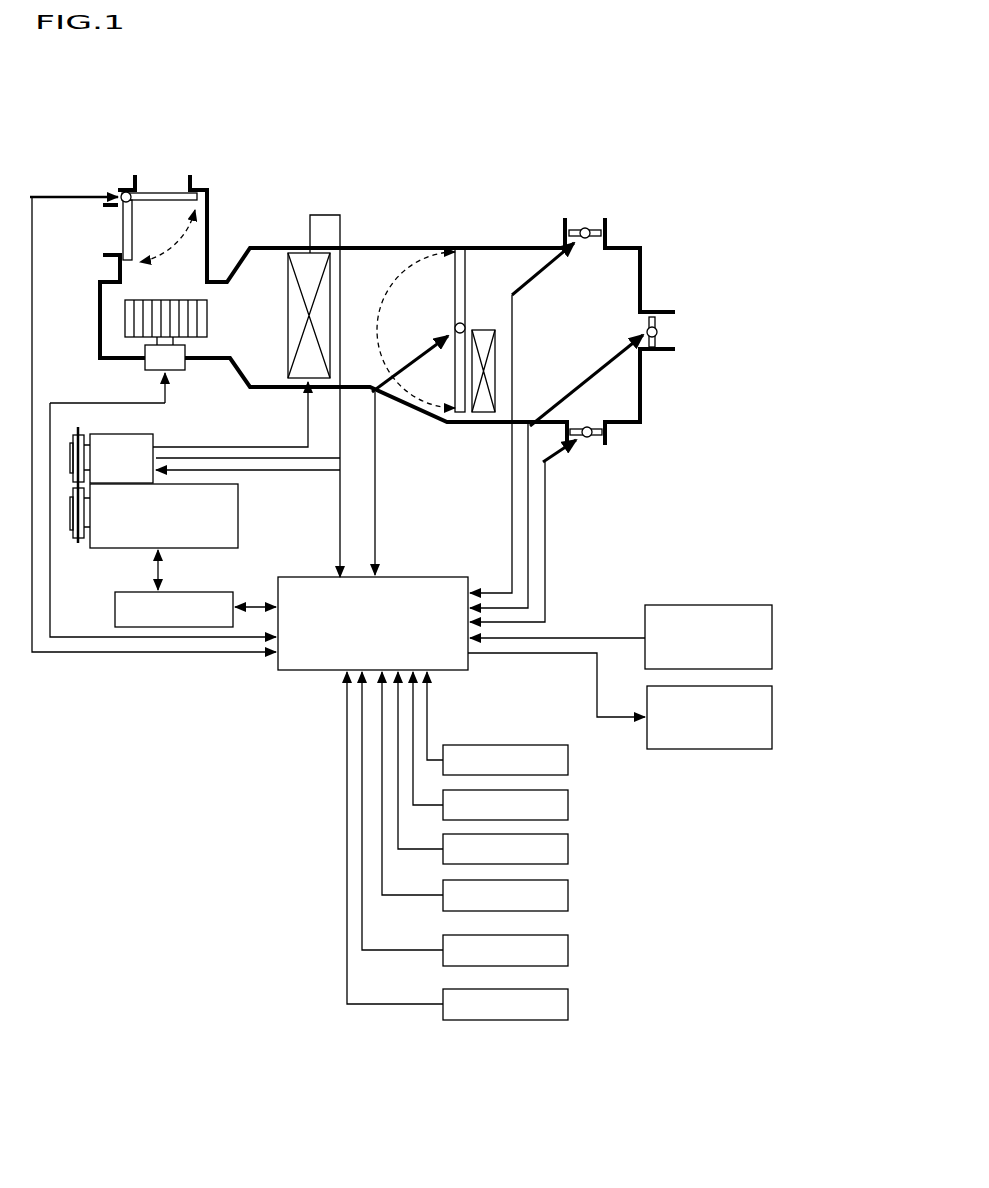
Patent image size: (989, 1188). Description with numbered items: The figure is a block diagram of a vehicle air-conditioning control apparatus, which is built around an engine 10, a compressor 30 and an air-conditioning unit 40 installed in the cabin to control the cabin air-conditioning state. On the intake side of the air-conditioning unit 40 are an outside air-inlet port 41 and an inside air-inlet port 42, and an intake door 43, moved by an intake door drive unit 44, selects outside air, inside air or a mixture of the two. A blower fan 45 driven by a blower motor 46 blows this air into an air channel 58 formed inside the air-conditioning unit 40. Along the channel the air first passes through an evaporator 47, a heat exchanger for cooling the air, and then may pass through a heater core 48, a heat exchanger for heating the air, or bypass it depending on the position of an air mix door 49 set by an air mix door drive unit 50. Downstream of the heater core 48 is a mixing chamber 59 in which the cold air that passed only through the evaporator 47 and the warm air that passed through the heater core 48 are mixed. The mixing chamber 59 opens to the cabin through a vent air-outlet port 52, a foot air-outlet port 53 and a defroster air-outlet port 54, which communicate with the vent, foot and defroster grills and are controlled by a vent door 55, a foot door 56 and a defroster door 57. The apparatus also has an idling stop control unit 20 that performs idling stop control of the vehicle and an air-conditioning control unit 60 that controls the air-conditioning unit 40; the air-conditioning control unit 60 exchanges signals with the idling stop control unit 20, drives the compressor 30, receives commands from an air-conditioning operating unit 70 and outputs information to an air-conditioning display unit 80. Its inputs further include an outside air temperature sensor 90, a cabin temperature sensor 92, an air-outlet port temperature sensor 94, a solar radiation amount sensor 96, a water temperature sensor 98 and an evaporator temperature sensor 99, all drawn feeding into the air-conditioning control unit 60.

The engine 10 is at (238, 512).
The idling stop control unit 20 is at (197, 592).
The compressor 30 is at (153, 440).
The air-conditioning unit 40 is at (425, 222).
The outside air-inlet port 41 is at (110, 230).
The inside air-inlet port 42 is at (168, 185).
The intake door 43 is at (127, 192).
The intake door drive unit 44 is at (123, 190).
The blower fan 45 is at (125, 320).
The blower motor 46 is at (145, 360).
The evaporator 47 is at (300, 250).
The heater core 48 is at (483, 330).
The air mix door 49 is at (455, 372).
The air mix door drive unit 50 is at (457, 325).
The vent air-outlet port 52 is at (668, 332).
The foot air-outlet port 53 is at (577, 440).
The defroster air-outlet port 54 is at (585, 222).
The vent door 55 is at (657, 337).
The foot door 56 is at (592, 437).
The defroster door 57 is at (587, 225).
The air channel 58 is at (260, 317).
The mixing chamber 59 is at (567, 318).
The air-conditioning control unit 60 is at (293, 672).
The air-conditioning operating unit 70 is at (772, 637).
The air-conditioning display unit 80 is at (772, 720).
The outside air temperature sensor 90 is at (568, 765).
The cabin temperature sensor 92 is at (568, 810).
The air-outlet port temperature sensor 94 is at (568, 854).
The solar radiation amount sensor 96 is at (568, 900).
The water temperature sensor 98 is at (568, 955).
The evaporator temperature sensor 99 is at (568, 1009).